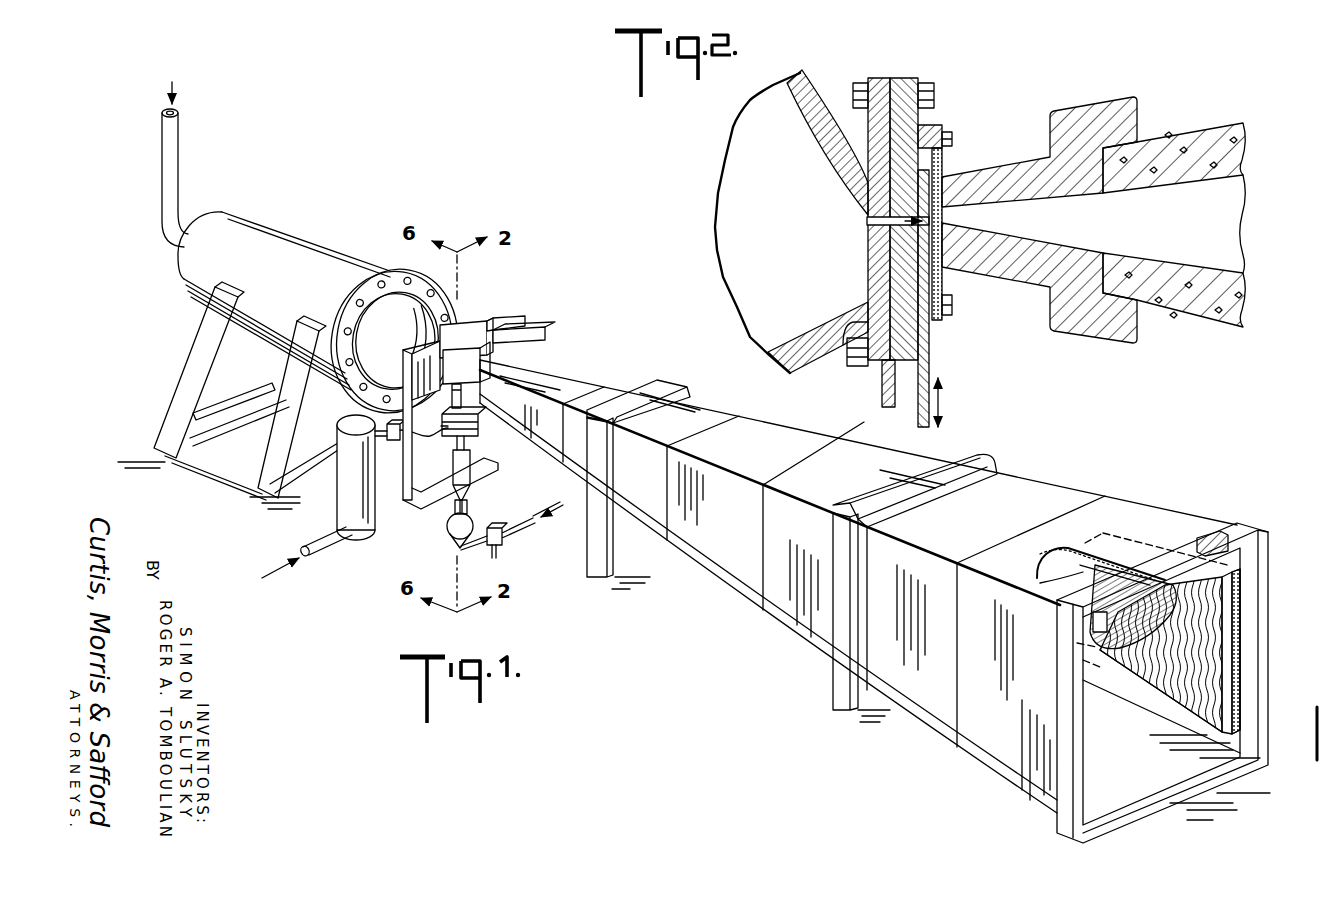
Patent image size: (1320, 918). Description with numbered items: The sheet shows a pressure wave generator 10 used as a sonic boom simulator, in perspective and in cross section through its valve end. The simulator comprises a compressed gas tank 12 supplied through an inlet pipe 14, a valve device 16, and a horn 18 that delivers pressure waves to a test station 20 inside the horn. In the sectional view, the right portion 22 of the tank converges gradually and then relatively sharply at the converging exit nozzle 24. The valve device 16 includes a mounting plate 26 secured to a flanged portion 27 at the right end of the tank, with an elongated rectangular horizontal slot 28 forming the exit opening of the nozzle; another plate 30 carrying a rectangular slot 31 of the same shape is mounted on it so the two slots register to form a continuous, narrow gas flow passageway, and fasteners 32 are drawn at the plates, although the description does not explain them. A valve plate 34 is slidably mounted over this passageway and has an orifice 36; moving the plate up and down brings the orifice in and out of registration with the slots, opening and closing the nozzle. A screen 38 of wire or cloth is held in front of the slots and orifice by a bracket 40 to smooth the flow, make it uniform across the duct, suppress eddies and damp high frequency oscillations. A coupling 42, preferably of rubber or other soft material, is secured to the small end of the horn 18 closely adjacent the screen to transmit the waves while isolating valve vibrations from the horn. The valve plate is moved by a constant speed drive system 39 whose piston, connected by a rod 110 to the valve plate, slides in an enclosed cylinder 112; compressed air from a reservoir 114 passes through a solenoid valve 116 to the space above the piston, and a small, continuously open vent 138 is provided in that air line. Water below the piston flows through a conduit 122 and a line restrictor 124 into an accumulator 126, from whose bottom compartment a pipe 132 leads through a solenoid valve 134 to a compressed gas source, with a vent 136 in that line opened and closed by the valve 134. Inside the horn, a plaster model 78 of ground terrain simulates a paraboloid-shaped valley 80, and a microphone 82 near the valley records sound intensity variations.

In FIG. 1, the pressure wave generator 10 is at (683, 614).
In FIG. 1, the compressed gas tank 12 is at (305, 246).
In FIG. 2, the compressed gas tank 12 is at (756, 240).
In FIG. 1, the inlet pipe 14 is at (179, 167).
In FIG. 2, the valve device 16 is at (950, 382).
In FIG. 1, the horn 18 is at (1082, 486).
In FIG. 2, the horn 18 is at (1220, 121).
In FIG. 1, the test station 20 is at (1154, 703).
In FIG. 1, the right portion of the tank 22 is at (345, 389).
In FIG. 2, the right portion of the tank 22 is at (806, 73).
In FIG. 2, the converging exit nozzle 24 is at (868, 220).
In FIG. 1, the mounting plate 26 is at (500, 331).
In FIG. 2, the mounting plate 26 is at (886, 373).
In FIG. 2, the flanged portion 27 is at (875, 78).
In FIG. 2, the rectangular horizontal slot 28 is at (888, 226).
In FIG. 1, the plate 30 is at (466, 326).
In FIG. 2, the plate 30 is at (909, 77).
In FIG. 2, the rectangular slot 31 is at (890, 246).
In FIG. 2, the bolt 32 is at (935, 92).
In FIG. 1, the valve plate 34 is at (451, 400).
In FIG. 2, the valve plate 34 is at (930, 374).
In FIG. 2, the orifice 36 is at (905, 196).
In FIG. 2, the screen 38 is at (945, 176).
In FIG. 1, the constant speed drive system 39 is at (480, 516).
In FIG. 2, the bracket 40 is at (940, 125).
In FIG. 1, the coupling 42 is at (535, 340).
In FIG. 2, the coupling 42 is at (1072, 110).
In FIG. 1, the plaster model 78 is at (1243, 622).
In FIG. 1, the paraboloid-shaped valley 80 is at (1156, 648).
In FIG. 1, the microphone 82 is at (1125, 622).
In FIG. 1, the rod 110 is at (454, 458).
In FIG. 1, the cylinder 112 is at (471, 459).
In FIG. 1, the reservoir 114 is at (362, 479).
In FIG. 1, the solenoid valve 116 is at (393, 442).
In FIG. 1, the conduit 122 is at (456, 491).
In FIG. 1, the line restrictor 124 is at (451, 513).
In FIG. 1, the accumulator 126 is at (449, 539).
In FIG. 1, the pipe 132 is at (460, 553).
In FIG. 1, the solenoid valve 134 is at (504, 539).
In FIG. 1, the vent 136 is at (497, 556).
In FIG. 1, the small vent 138 is at (441, 432).